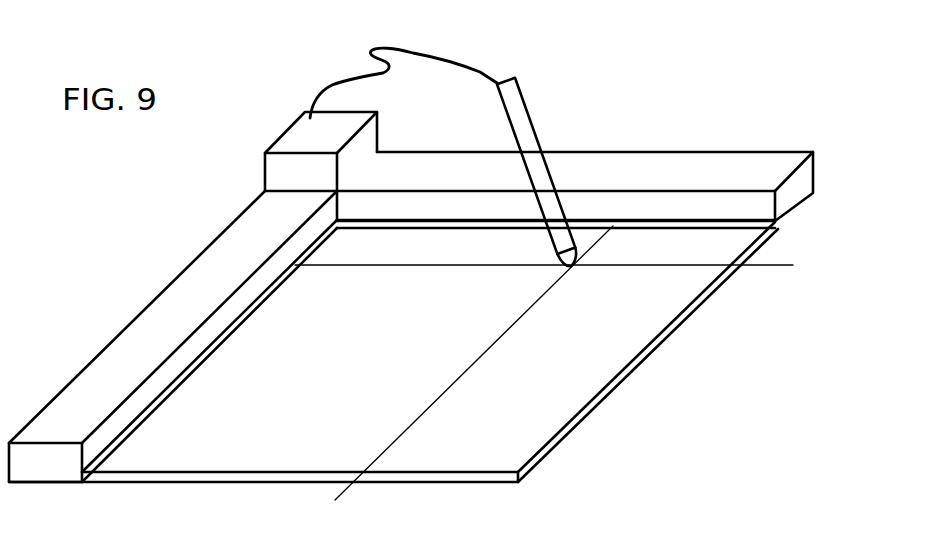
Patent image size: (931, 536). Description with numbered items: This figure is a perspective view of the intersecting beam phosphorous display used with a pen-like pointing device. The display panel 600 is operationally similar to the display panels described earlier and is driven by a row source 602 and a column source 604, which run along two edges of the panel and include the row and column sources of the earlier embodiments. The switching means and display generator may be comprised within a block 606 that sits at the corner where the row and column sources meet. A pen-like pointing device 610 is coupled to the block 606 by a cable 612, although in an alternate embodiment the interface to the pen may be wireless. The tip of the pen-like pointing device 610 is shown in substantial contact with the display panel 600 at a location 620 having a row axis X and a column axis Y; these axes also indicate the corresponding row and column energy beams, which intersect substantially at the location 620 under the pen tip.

The display panel 600 is at (393, 351).
The row source 602 is at (173, 336).
The column source 604 is at (575, 186).
The block 606 is at (321, 151).
The pen-like pointing device 610 is at (520, 113).
The cable 612 is at (473, 62).
The location 620 is at (573, 267).